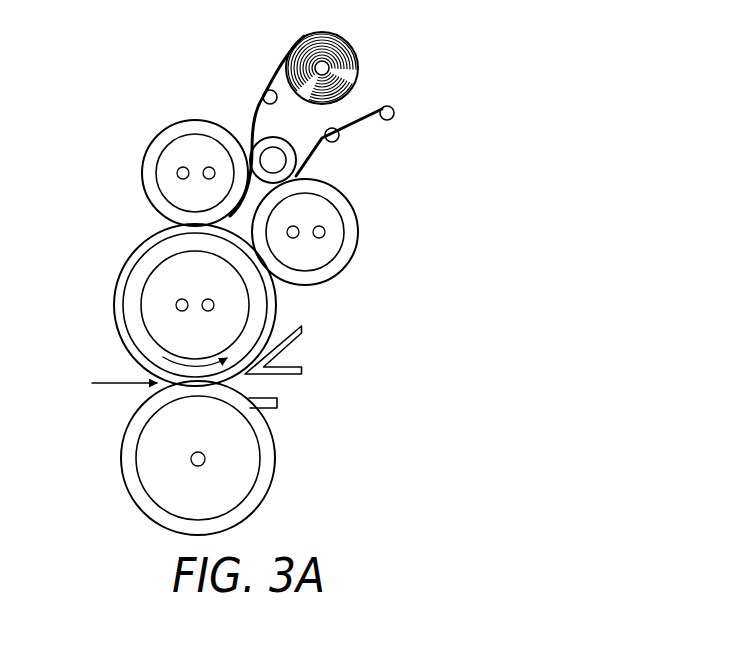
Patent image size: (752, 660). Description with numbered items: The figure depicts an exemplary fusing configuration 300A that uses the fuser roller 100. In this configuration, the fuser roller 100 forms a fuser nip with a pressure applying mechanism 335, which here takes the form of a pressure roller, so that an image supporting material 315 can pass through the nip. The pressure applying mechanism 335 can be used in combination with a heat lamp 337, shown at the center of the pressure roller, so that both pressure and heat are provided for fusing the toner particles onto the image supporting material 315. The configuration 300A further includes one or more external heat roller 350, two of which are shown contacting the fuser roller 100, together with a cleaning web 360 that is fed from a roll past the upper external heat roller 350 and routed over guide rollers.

The fusing configuration 300A is at (177, 73).
The cleaning web 360 is at (380, 71).
The external heat roller 350 is at (157, 140).
The fuser roller 100 is at (127, 257).
The image supporting material 315 is at (123, 383).
The pressure applying mechanism 335 is at (277, 433).
The heat lamp 337 is at (195, 466).